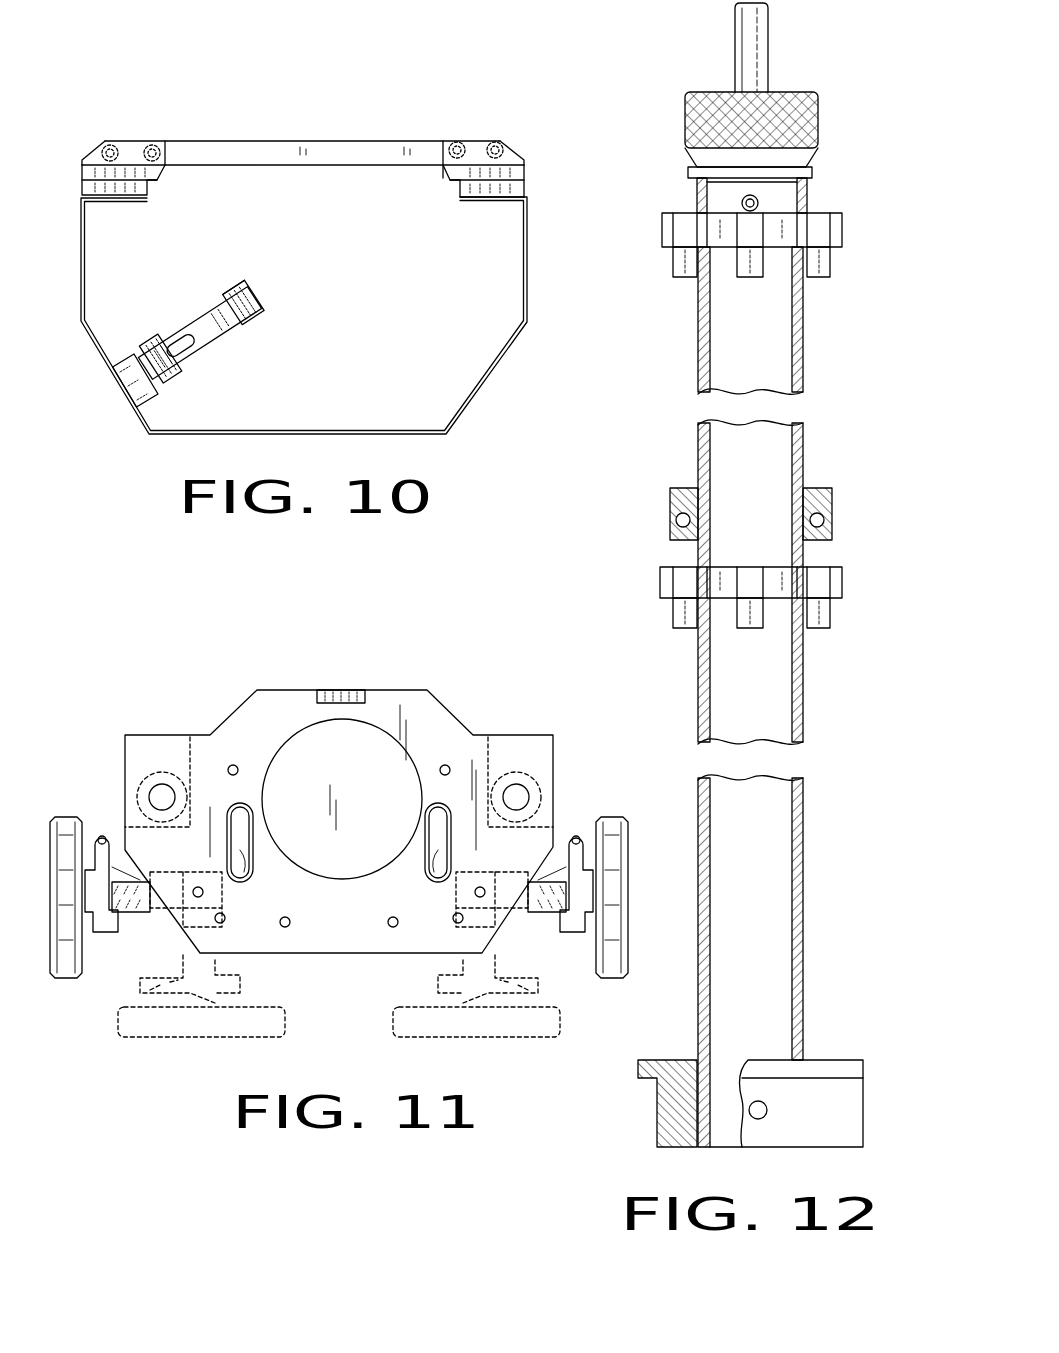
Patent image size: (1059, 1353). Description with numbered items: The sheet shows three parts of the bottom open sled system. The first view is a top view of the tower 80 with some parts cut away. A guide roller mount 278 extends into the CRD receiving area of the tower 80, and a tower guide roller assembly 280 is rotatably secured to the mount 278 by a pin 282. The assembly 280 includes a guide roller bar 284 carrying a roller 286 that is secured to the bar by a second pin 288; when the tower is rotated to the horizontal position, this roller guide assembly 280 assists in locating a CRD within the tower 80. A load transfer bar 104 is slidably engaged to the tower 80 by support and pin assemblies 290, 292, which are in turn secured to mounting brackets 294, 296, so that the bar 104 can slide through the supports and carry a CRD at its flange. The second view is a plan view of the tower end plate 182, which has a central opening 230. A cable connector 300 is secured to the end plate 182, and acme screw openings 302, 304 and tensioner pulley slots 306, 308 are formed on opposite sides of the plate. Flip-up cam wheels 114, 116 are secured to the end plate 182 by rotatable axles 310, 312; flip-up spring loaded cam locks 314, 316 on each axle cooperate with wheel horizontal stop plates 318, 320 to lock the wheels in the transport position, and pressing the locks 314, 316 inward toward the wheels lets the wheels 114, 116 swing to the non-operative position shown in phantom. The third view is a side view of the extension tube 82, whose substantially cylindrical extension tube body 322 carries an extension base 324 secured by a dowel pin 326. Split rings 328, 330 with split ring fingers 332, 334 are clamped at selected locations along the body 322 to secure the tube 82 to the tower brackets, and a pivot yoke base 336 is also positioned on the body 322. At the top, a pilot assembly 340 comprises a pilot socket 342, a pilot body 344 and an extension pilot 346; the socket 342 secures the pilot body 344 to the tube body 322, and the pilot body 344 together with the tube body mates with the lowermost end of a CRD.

In FIG. 10, the tower 80 is at (492, 378).
In FIG. 12, the extension tube 82 is at (815, 690).
In FIG. 10, the load transfer bar 104 is at (315, 150).
In FIG. 11, the flip-up cam wheel 114 is at (68, 980).
In FIG. 11, the flip-up cam wheel 116 is at (607, 980).
In FIG. 11, the end plate 182 is at (448, 708).
In FIG. 11, the central aperture 230 is at (393, 742).
In FIG. 10, the guide roller mount 278 is at (128, 352).
In FIG. 10, the tower guide roller assembly 280 is at (192, 312).
In FIG. 10, the pin 282 is at (187, 387).
In FIG. 10, the guide roller bar 284 is at (240, 357).
In FIG. 10, the roller 286 is at (252, 312).
In FIG. 10, the pin 288 is at (262, 331).
In FIG. 10, the support and pin assembly 290 is at (93, 151).
In FIG. 10, the support and pin assembly 292 is at (512, 152).
In FIG. 10, the mounting bracket 294 is at (82, 186).
In FIG. 10, the mounting bracket 296 is at (527, 187).
In FIG. 11, the cable connector 300 is at (370, 692).
In FIG. 11, the acme screw opening 302 is at (157, 787).
In FIG. 11, the acme screw opening 304 is at (515, 787).
In FIG. 11, the tensioner pulley slot 306 is at (247, 880).
In FIG. 11, the tensioner pulley slot 308 is at (433, 880).
In FIG. 11, the rotatable axle 310 is at (110, 933).
In FIG. 11, the rotatable axle 312 is at (568, 933).
In FIG. 11, the flip-up spring loaded cam lock 314 is at (122, 835).
In FIG. 11, the flip-up spring loaded cam lock 316 is at (563, 837).
In FIG. 11, the wheel horizontal stop plate 318 is at (141, 917).
In FIG. 11, the wheel horizontal stop plate 320 is at (527, 917).
In FIG. 12, the extension tube body 322 is at (805, 438).
In FIG. 12, the extension base 324 is at (833, 1113).
In FIG. 12, the dowel pin 326 is at (762, 1120).
In FIG. 12, the split ring 328 is at (842, 228).
In FIG. 12, the split ring 330 is at (843, 577).
In FIG. 12, the split ring fingers 332 is at (685, 262).
In FIG. 12, the split ring fingers 334 is at (685, 615).
In FIG. 12, the pivot yoke base 336 is at (833, 495).
In FIG. 12, the pilot assembly 340 is at (840, 115).
In FIG. 12, the pilot socket 342 is at (700, 182).
In FIG. 12, the pilot body 344 is at (685, 117).
In FIG. 12, the extension pilot 346 is at (768, 38).